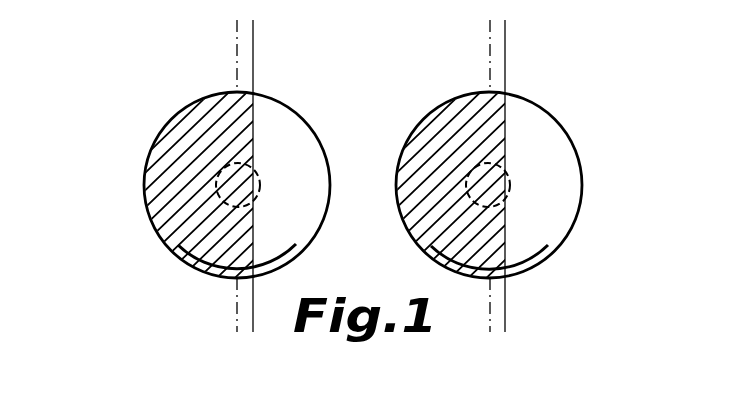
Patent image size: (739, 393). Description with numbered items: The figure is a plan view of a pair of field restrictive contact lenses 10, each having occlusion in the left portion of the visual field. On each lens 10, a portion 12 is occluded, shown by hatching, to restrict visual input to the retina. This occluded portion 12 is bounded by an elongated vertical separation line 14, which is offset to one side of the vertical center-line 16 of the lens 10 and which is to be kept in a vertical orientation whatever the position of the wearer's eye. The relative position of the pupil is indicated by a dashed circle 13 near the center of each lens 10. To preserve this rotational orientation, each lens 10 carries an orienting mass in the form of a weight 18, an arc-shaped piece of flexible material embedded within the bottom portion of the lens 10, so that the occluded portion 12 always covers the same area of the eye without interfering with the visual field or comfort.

The field restrictive contact lens 10 is at (403, 130).
The occluded portion 12 is at (158, 152).
The circle showing relative position of the pupil 13 is at (214, 183).
The vertical separation line 14 is at (253, 39).
The vertical center-line 16 is at (237, 39).
The orienting mass (weight) 18 is at (192, 251).